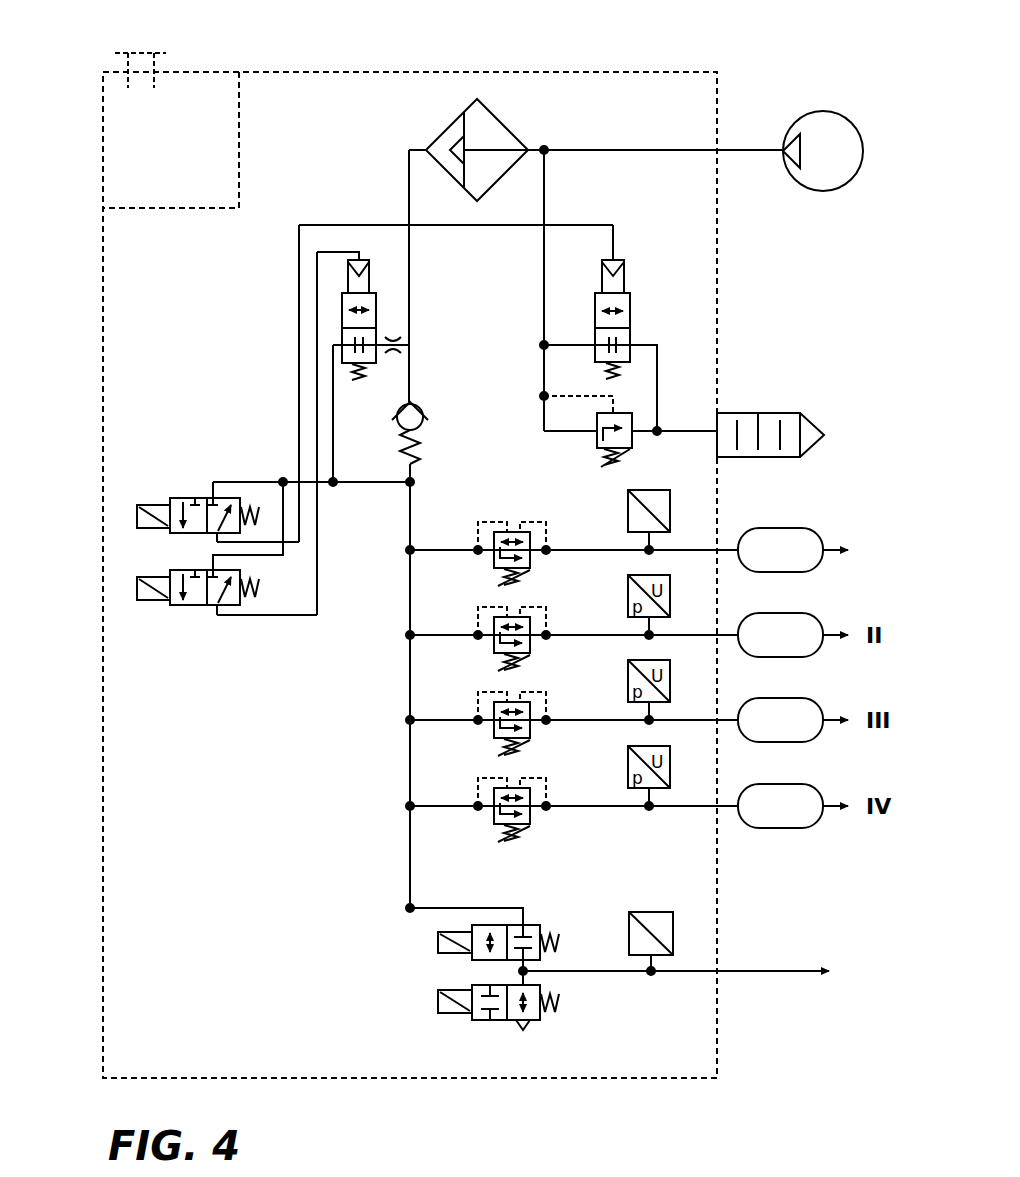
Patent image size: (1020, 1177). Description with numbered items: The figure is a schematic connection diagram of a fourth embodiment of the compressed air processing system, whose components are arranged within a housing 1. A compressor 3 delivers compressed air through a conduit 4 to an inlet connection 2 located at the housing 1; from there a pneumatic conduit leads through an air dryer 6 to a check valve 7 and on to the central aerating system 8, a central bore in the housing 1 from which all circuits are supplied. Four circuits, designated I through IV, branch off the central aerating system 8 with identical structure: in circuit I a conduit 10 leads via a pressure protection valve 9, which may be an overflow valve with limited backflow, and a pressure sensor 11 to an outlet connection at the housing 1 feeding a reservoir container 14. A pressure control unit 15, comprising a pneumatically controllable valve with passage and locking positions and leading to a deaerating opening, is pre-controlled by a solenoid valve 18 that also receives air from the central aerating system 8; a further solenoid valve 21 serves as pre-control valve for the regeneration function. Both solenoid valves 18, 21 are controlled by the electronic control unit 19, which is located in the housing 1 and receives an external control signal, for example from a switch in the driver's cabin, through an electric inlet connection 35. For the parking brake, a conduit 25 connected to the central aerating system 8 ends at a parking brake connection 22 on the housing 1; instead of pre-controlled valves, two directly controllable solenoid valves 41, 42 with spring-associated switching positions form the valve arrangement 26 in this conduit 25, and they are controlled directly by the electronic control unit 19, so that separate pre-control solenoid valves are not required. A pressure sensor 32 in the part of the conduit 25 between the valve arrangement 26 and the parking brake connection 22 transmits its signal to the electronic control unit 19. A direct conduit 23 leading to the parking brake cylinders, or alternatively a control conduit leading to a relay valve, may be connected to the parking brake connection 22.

The housing 1 is at (380, 68).
The inlet connection 2 is at (716, 149).
The compressor 3 is at (822, 142).
The conduit 4 is at (748, 149).
The air dryer 6 is at (501, 116).
The check valve 7 is at (414, 413).
The central aerating system 8 is at (413, 466).
The pressure protection valve 9 is at (516, 524).
The conduit 10 is at (578, 548).
The pressure sensor 11 is at (676, 520).
The reservoir container 14 is at (784, 543).
The pressure control unit 15 is at (660, 325).
The solenoid valve 18 is at (134, 515).
The electronic control unit 19 is at (142, 140).
The solenoid valve 21 is at (134, 590).
The parking brake connection 22 is at (722, 975).
The direct conduit 23 is at (768, 970).
The conduit 25 is at (410, 872).
The valve arrangement 26 is at (434, 1004).
The pressure sensor 32 is at (680, 929).
The electric inlet connection 35 is at (141, 53).
The solenoid valve 41 is at (434, 941).
The solenoid valve 42 is at (500, 1022).